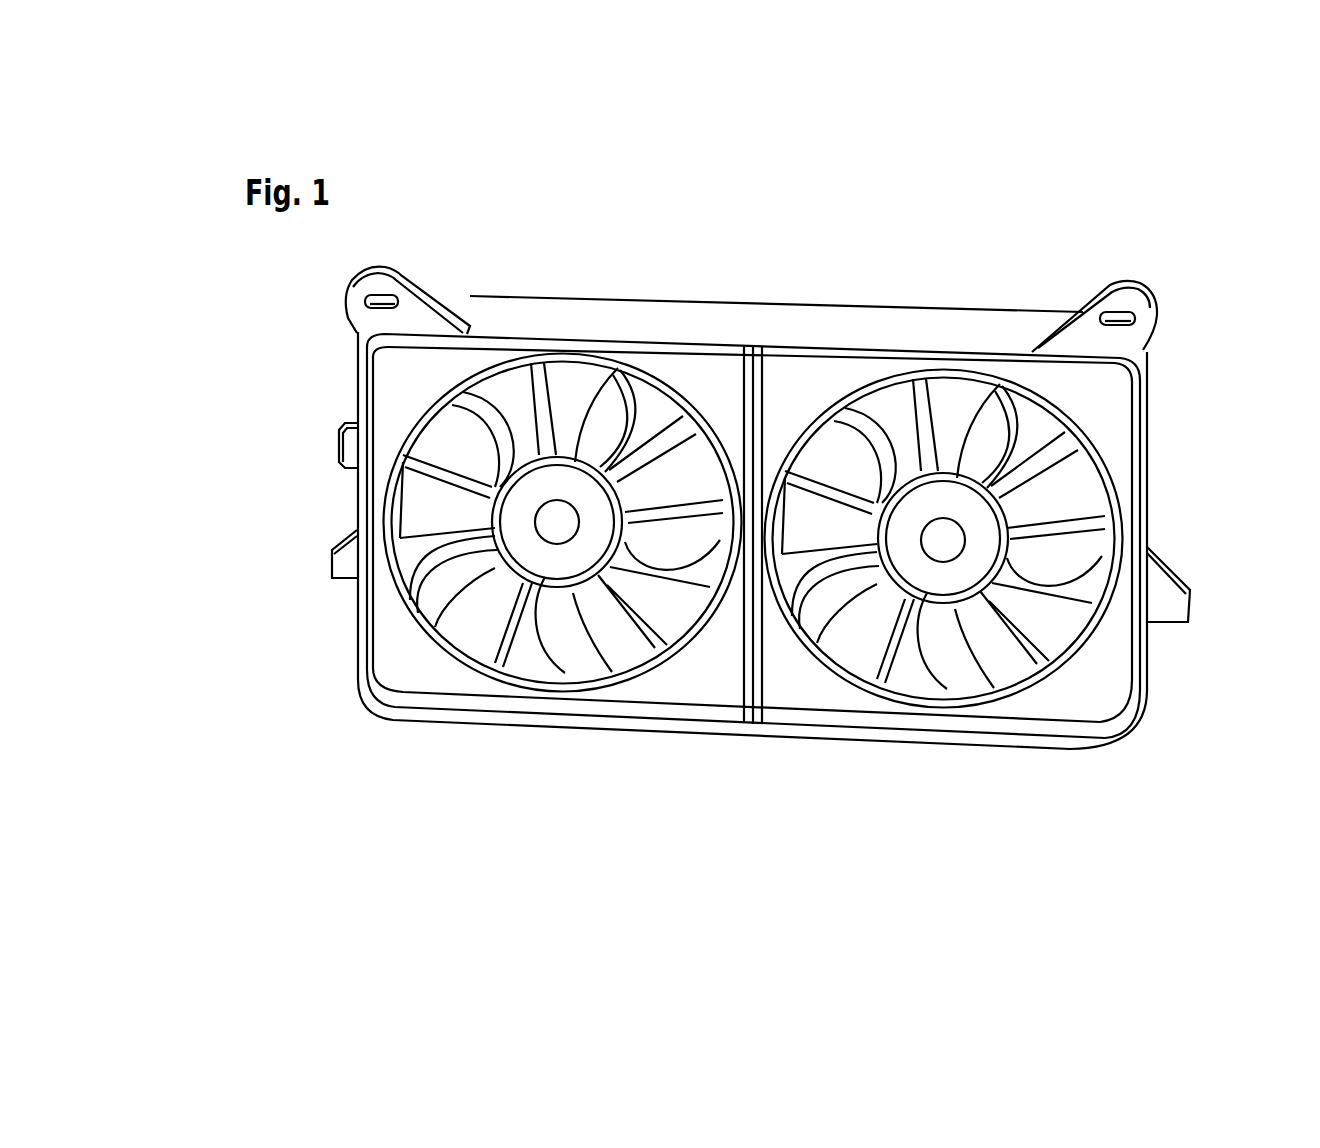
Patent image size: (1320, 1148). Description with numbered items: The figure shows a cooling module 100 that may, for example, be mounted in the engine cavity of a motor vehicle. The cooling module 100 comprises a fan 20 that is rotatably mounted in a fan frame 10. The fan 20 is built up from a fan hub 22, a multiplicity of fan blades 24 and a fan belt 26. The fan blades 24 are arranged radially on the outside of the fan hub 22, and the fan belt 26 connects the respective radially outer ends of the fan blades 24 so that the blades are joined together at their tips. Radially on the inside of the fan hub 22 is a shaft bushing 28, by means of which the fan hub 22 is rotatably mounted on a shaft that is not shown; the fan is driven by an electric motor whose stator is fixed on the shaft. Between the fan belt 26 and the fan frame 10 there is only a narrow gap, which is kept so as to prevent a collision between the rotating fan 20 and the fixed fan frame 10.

The cooling module 100 is at (1227, 280).
The fan frame 10 is at (1087, 330).
The fan 20 is at (1122, 454).
The fan hub 22 is at (952, 573).
The fan blades 24 is at (832, 597).
The fan belt 26 is at (820, 643).
The shaft bushing 28 is at (945, 541).